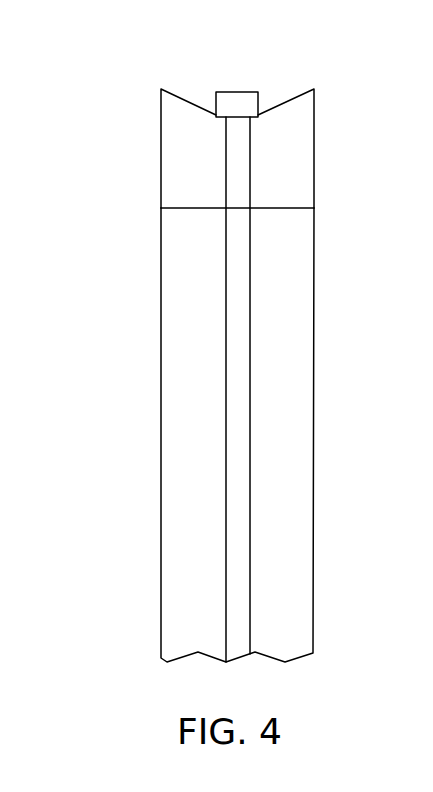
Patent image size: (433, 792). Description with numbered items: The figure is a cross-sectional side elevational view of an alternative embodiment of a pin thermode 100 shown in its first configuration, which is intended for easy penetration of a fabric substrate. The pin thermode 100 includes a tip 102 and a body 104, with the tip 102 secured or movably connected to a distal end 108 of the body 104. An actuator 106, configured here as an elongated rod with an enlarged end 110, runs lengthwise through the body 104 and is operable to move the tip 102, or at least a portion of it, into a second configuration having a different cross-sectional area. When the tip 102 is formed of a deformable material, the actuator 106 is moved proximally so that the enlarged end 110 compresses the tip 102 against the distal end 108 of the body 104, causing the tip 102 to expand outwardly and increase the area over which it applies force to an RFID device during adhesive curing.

The pin thermode 100 is at (205, 351).
The tip 102 is at (316, 151).
The body 104 is at (316, 344).
The actuator 106 is at (249, 482).
The distal end 108 is at (161, 205).
The enlarged end 110 is at (236, 92).